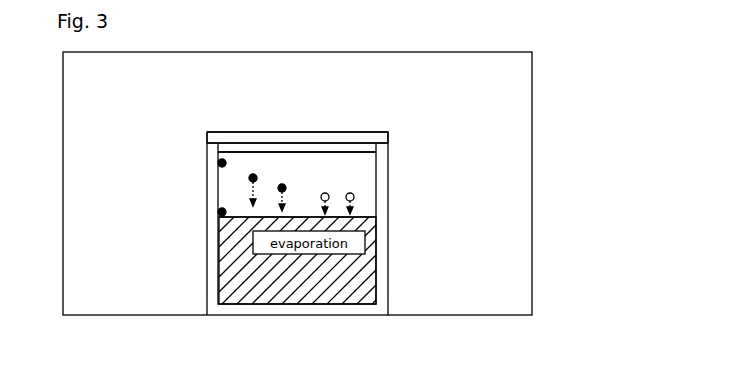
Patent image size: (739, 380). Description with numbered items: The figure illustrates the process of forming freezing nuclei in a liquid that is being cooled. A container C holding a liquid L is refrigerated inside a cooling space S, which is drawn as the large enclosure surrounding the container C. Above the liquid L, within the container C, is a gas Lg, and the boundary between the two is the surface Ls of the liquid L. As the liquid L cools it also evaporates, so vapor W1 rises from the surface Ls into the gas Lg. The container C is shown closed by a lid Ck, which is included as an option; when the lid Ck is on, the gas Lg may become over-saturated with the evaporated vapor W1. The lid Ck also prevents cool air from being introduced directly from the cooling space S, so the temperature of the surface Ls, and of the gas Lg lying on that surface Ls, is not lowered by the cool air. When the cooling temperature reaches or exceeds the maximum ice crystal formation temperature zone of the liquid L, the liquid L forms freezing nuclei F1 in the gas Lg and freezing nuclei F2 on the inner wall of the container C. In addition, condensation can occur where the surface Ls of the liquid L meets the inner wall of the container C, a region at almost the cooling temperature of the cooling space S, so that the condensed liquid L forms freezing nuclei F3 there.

The cooling space S is at (297, 183).
The container C is at (382, 278).
The lid Ck is at (381, 132).
The liquid L is at (263, 282).
The surface of the liquid Ls is at (362, 217).
The gas Lg is at (308, 168).
The freezing nuclei F1 is at (282, 184).
The freezing nuclei F2 is at (218, 164).
The freezing nuclei F3 is at (218, 212).
The vapor W1 is at (350, 193).